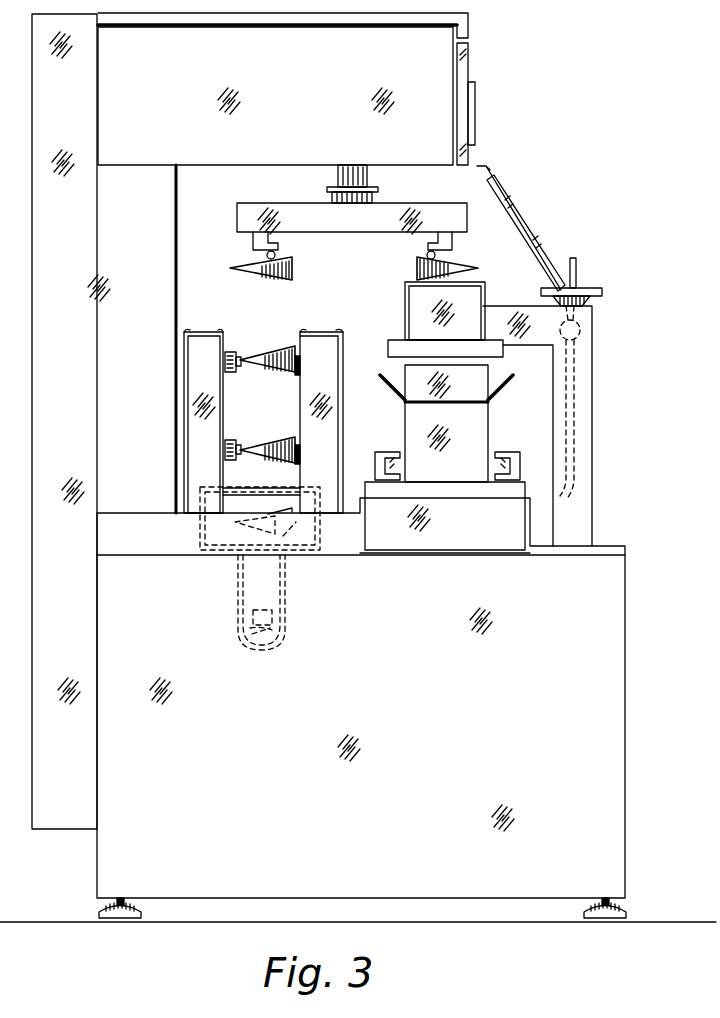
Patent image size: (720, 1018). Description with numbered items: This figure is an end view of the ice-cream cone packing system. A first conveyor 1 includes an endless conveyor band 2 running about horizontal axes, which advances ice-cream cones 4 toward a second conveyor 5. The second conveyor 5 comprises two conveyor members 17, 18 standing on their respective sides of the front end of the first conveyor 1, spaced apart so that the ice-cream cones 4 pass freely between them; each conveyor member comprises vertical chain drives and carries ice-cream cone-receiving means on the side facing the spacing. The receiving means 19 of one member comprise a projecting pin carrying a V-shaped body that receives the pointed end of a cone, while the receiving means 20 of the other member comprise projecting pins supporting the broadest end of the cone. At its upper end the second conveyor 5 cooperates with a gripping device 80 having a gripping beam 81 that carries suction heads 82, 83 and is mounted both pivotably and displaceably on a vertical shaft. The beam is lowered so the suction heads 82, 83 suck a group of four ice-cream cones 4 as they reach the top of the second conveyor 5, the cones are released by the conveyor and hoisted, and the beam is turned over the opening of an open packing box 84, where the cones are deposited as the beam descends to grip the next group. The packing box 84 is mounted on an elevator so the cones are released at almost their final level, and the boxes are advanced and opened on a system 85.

The first conveyor 1 is at (287, 590).
The endless conveyor band 2 is at (256, 548).
The ice-cream cone 4 is at (293, 271).
The second conveyor 5 is at (176, 438).
The conveyor member 17 is at (330, 364).
The conveyor member 18 is at (202, 346).
The ice-cream cone-receiving means 19 is at (237, 356).
The ice-cream cone-receiving means 20 is at (297, 448).
The gripping device 80 is at (305, 204).
The gripping beam 81 is at (264, 222).
The suction head 82 is at (280, 243).
The suction head 83 is at (425, 243).
The packing box 84 is at (488, 416).
The system 85 is at (532, 487).